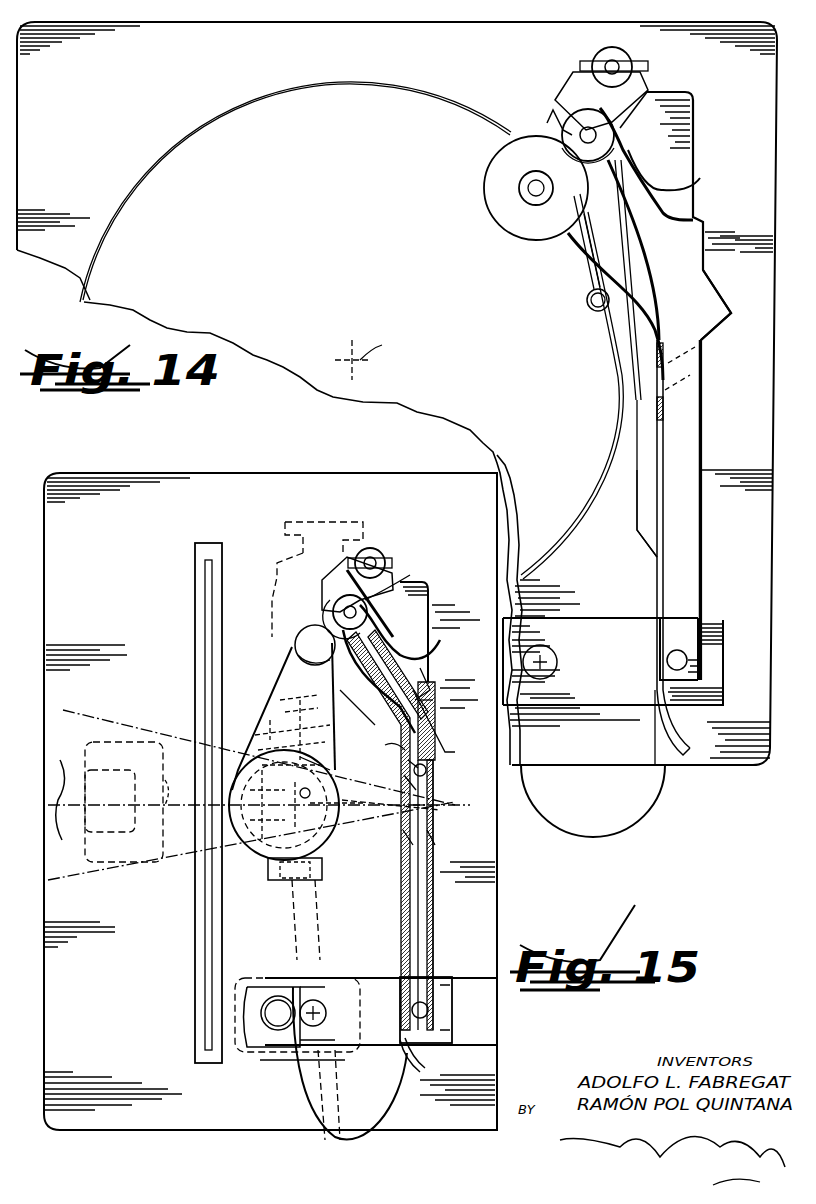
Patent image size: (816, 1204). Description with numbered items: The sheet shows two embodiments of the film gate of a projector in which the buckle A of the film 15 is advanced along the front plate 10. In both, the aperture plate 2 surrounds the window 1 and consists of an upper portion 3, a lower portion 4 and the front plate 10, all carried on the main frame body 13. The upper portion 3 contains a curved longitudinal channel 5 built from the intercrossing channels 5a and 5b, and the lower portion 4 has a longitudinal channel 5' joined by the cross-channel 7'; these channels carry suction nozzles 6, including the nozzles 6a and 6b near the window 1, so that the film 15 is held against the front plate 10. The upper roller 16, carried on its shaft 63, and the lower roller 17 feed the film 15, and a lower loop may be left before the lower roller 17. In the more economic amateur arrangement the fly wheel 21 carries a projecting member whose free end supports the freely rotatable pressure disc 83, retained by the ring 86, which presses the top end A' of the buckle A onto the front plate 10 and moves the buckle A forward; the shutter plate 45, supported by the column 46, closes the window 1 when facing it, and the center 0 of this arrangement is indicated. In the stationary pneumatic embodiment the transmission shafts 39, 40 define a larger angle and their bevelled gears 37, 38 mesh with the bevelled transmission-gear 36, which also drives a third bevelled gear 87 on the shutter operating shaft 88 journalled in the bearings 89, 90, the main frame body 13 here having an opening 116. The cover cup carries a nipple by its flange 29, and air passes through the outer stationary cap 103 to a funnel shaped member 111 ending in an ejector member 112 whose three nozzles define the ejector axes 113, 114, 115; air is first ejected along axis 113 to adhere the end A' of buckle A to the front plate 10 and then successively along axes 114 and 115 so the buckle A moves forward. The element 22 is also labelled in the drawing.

In FIG. 14, the window 1 is at (663, 388).
In FIG. 14, the aperture plate 2 is at (725, 295).
In FIG. 15, the aperture plate 2 is at (435, 695).
In FIG. 14, the upper portion 3 is at (680, 212).
In FIG. 14, the lower portion 4 is at (705, 440).
In FIG. 15, the lower portion 4 is at (433, 905).
In FIG. 15, the longitudinal channel 5 is at (441, 721).
In FIG. 15, the intercrossing channel 5a is at (455, 760).
In FIG. 15, the intercrossing channel 5b is at (451, 676).
In FIG. 15, the longitudinal channel 5' is at (438, 829).
In FIG. 15, the suction nozzle 6 is at (395, 765).
In FIG. 15, the suction nozzle 6a is at (430, 780).
In FIG. 15, the suction nozzle 6b is at (433, 805).
In FIG. 14, the cross-channel 7' is at (715, 688).
In FIG. 15, the cross-channel 7' is at (435, 1010).
In FIG. 14, the front plate 10 is at (637, 530).
In FIG. 15, the front plate 10 is at (420, 1070).
In FIG. 14, the main frame body 13 is at (690, 120).
In FIG. 14, the film 15 is at (705, 190).
In FIG. 15, the film 15 is at (440, 648).
In FIG. 14, the upper roller 16 is at (600, 130).
In FIG. 14, the lower roller 17 is at (545, 635).
In FIG. 14, the fly wheel 21 is at (560, 507).
In FIG. 15, the housing 22 is at (109, 802).
In FIG. 14, the flange 29 is at (660, 800).
In FIG. 15, the bevelled transmission-gear 36 is at (340, 825).
In FIG. 15, the bevelled gear 37 is at (325, 865).
In FIG. 15, the bevelled gear 38 is at (335, 775).
In FIG. 15, the transmission shaft 39 is at (320, 905).
In FIG. 15, the transmission shaft 40 is at (285, 675).
In FIG. 14, the shutter plate 45 is at (588, 257).
In FIG. 14, the column 46 is at (598, 312).
In FIG. 14, the shaft 63 is at (630, 112).
In FIG. 14, the pressure disc 83 is at (510, 212).
In FIG. 14, the ring 86 is at (520, 188).
In FIG. 15, the third bevelled gear 87 is at (262, 843).
In FIG. 15, the shutter operating shaft 88 is at (176, 817).
In FIG. 15, the bearing 89 is at (192, 860).
In FIG. 15, the bearing 90 is at (115, 860).
In FIG. 15, the outer stationary cap 103 is at (380, 750).
In FIG. 15, the funnel shaped member 111 is at (360, 716).
In FIG. 15, the ejector member 112 is at (317, 579).
In FIG. 15, the ejector axis 113 is at (395, 565).
In FIG. 15, the ejector axis 114 is at (333, 612).
In FIG. 15, the ejector axis 115 is at (290, 688).
In FIG. 15, the opening 116 is at (198, 995).
In FIG. 14, the center 0 is at (364, 355).
In FIG. 14, the buckle A is at (615, 358).
In FIG. 15, the buckle A is at (404, 651).
In FIG. 14, the top end of buckle A' is at (634, 243).
In FIG. 15, the top end of buckle A' is at (413, 583).